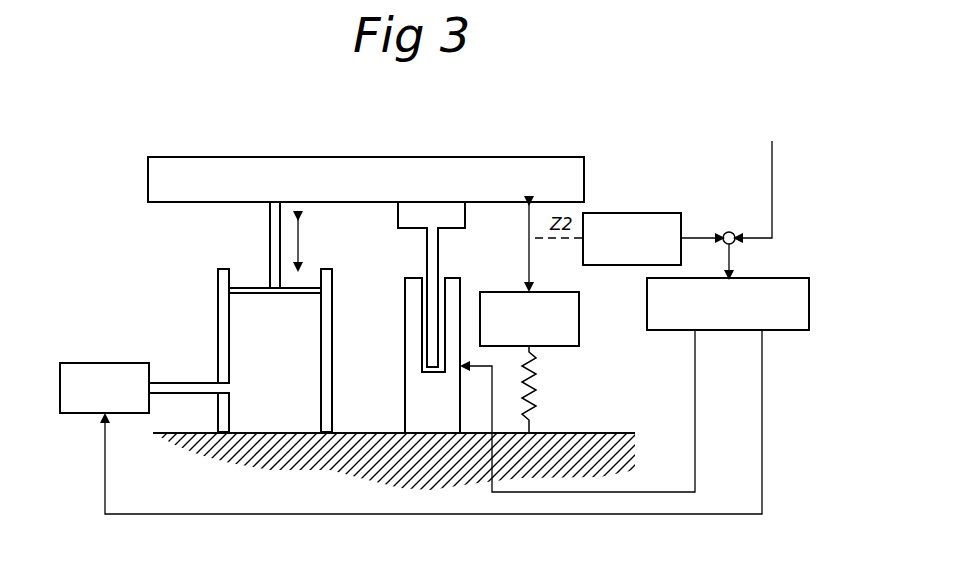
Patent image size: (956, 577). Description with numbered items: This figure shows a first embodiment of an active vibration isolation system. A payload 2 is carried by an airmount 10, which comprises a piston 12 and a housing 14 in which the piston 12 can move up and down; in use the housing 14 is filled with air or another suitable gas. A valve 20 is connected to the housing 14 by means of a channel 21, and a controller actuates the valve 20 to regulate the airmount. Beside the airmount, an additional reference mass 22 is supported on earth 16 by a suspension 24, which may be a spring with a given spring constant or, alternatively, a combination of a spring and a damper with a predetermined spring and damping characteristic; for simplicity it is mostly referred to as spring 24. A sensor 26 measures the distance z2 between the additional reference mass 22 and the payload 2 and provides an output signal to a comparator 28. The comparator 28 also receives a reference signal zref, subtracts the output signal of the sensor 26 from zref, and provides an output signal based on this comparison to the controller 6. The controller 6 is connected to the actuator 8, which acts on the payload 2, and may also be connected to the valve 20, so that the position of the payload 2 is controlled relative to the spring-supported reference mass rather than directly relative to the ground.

The payload 2 is at (253, 172).
The controller 6 is at (775, 278).
The actuator 8 is at (452, 259).
The airmount 10 is at (322, 241).
The piston 12 is at (256, 293).
The housing 14 is at (300, 374).
The earth 16 is at (580, 442).
The valve 20 is at (70, 413).
The channel 21 is at (190, 383).
The additional reference mass 22 is at (560, 320).
The suspension 24 is at (531, 386).
The sensor 26 is at (633, 218).
The comparator 28 is at (729, 232).